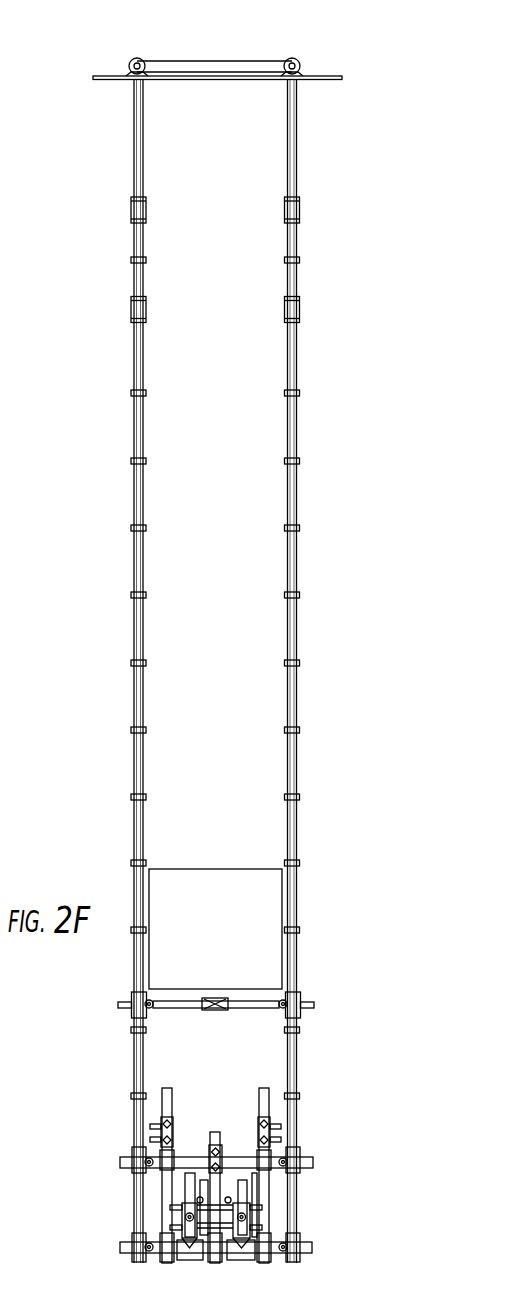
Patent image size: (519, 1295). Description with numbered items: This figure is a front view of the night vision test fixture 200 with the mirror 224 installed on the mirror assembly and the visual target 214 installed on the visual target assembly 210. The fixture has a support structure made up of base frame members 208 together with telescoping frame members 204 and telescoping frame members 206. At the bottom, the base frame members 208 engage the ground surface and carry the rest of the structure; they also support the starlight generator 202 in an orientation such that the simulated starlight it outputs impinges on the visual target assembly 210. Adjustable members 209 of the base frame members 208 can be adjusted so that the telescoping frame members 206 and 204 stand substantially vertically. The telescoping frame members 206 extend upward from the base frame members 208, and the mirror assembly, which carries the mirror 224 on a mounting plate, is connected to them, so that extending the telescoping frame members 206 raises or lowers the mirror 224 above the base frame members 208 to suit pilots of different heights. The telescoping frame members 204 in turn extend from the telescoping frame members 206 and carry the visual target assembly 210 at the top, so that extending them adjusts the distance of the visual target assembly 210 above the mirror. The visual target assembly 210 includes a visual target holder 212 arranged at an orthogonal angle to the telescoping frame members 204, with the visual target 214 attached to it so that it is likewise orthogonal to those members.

The night vision test fixture 200 is at (213, 68).
The starlight generator 202 is at (227, 1190).
The telescoping frame members 204 is at (143, 515).
The telescoping frame members 206 is at (131, 1023).
The base frame members 208 is at (165, 1183).
The adjustable members 209 is at (120, 1160).
The visual target assembly 210 is at (90, 73).
The visual target holder 212 is at (95, 81).
The visual target 214 is at (197, 79).
The mirror 224 is at (277, 912).